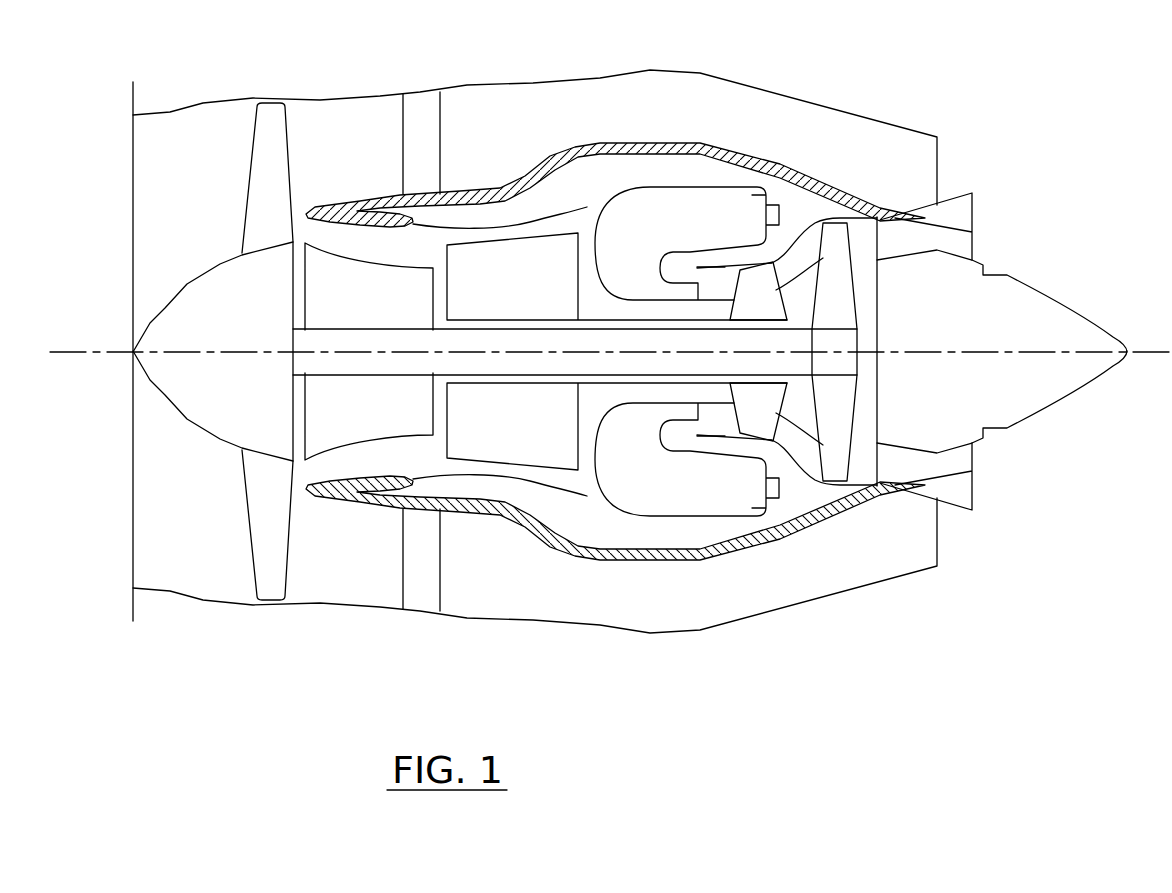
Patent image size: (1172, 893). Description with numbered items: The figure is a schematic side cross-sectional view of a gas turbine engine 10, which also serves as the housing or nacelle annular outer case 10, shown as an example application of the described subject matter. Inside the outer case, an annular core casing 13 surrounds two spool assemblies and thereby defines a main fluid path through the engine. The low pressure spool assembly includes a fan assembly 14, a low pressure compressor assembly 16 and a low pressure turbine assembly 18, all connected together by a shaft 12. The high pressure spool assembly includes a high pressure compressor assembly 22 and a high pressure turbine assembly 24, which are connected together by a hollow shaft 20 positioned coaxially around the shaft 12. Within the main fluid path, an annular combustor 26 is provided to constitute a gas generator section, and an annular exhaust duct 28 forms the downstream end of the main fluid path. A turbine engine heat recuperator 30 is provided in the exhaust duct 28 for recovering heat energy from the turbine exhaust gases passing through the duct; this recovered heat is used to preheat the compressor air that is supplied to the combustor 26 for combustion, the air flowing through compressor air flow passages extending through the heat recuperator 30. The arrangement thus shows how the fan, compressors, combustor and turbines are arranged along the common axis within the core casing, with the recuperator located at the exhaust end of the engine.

The gas turbine engine 10 is at (570, 83).
The shaft 12 is at (375, 375).
The annular core casing 13 is at (588, 137).
The fan assembly 14 is at (247, 160).
The low pressure compressor assembly 16 is at (330, 423).
The low pressure turbine assembly 18 is at (862, 458).
The hollow shaft 20 is at (507, 317).
The high pressure compressor assembly 22 is at (481, 257).
The high pressure turbine assembly 24 is at (757, 418).
The annular combustor 26 is at (667, 203).
The annular exhaust duct 28 is at (950, 240).
The turbine engine heat recuperator 30 is at (890, 237).